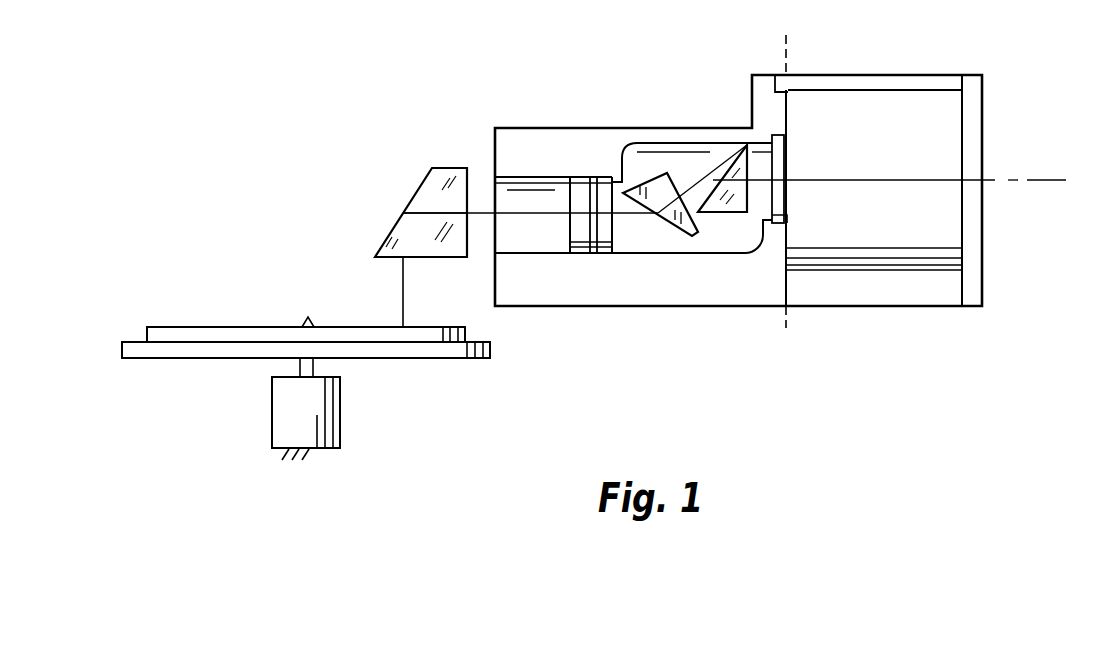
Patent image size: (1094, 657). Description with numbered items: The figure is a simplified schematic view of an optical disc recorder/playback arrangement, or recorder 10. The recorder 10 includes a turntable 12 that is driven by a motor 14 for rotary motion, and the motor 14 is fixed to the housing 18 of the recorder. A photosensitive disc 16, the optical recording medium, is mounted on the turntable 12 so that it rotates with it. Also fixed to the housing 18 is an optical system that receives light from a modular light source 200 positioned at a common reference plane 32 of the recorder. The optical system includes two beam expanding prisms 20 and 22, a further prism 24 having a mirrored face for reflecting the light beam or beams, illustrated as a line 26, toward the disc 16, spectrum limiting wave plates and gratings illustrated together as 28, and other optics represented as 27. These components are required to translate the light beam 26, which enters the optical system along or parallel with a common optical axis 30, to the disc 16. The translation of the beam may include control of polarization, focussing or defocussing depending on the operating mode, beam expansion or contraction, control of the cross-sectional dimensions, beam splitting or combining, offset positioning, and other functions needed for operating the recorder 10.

The optical disc recorder/playback arrangement 10 is at (604, 422).
The turntable 12 is at (490, 350).
The motor 14 is at (340, 412).
The photosensitive disc 16 is at (232, 327).
The housing 18 is at (311, 450).
The beam expanding prism 20 is at (665, 223).
The beam expanding prism 22 is at (722, 174).
The prism having a mirrored face 24 is at (420, 184).
The light beam 26 is at (403, 296).
The other optics 27 is at (572, 232).
The spectrum limiting wave plates and gratings 28 is at (772, 208).
The optical axis 30 is at (1067, 182).
The common reference plane 32 is at (786, 52).
The modular light source 200 is at (963, 120).